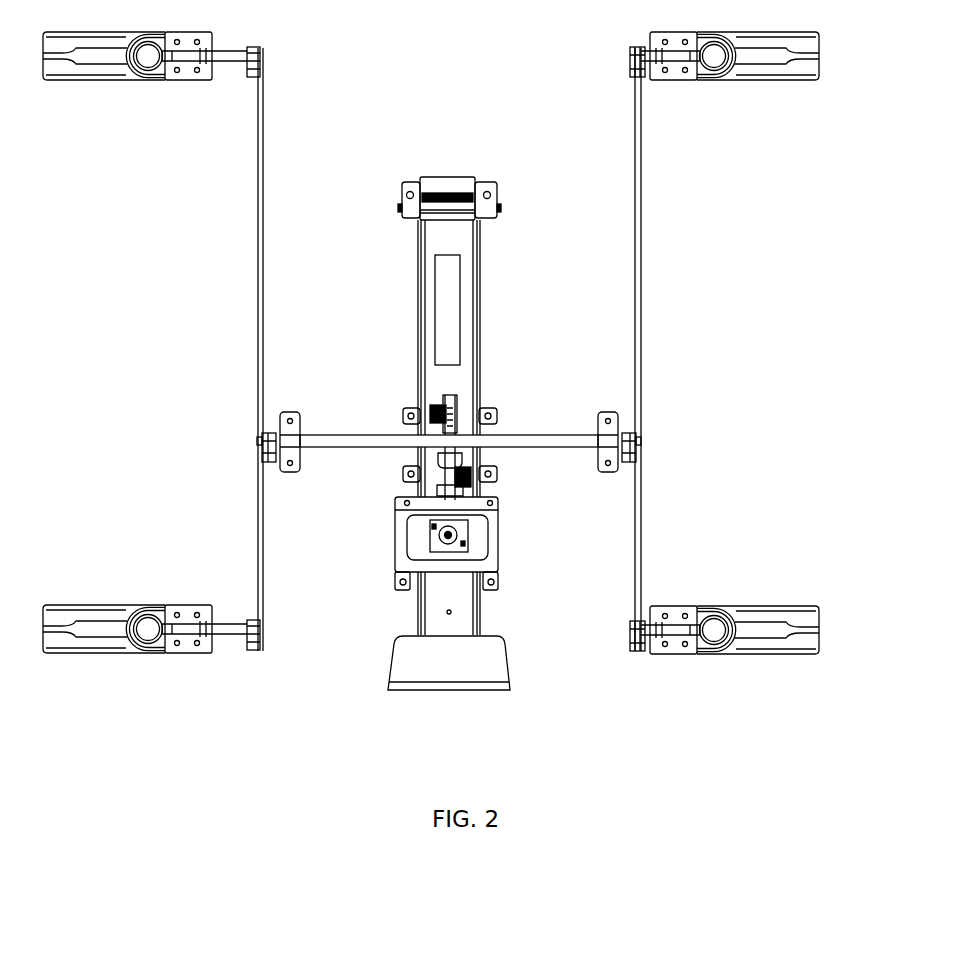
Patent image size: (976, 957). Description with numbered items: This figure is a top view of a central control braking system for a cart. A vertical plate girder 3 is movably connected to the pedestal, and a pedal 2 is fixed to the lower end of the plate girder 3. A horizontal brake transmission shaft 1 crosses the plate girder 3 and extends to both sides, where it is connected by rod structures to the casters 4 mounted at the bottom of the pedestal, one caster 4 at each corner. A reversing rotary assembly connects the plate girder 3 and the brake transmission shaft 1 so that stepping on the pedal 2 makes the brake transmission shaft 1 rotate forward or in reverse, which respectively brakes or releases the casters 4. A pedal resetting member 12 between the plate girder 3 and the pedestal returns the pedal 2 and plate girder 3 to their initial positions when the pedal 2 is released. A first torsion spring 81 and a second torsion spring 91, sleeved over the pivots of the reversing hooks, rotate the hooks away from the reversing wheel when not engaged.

The brake transmission shaft 1 is at (523, 435).
The pedal 2 is at (453, 670).
The plate girder 3 is at (473, 312).
The caster 4 is at (768, 610).
The pedal resetting member 12 is at (465, 532).
The first torsion spring 81 is at (480, 483).
The second torsion spring 91 is at (430, 410).